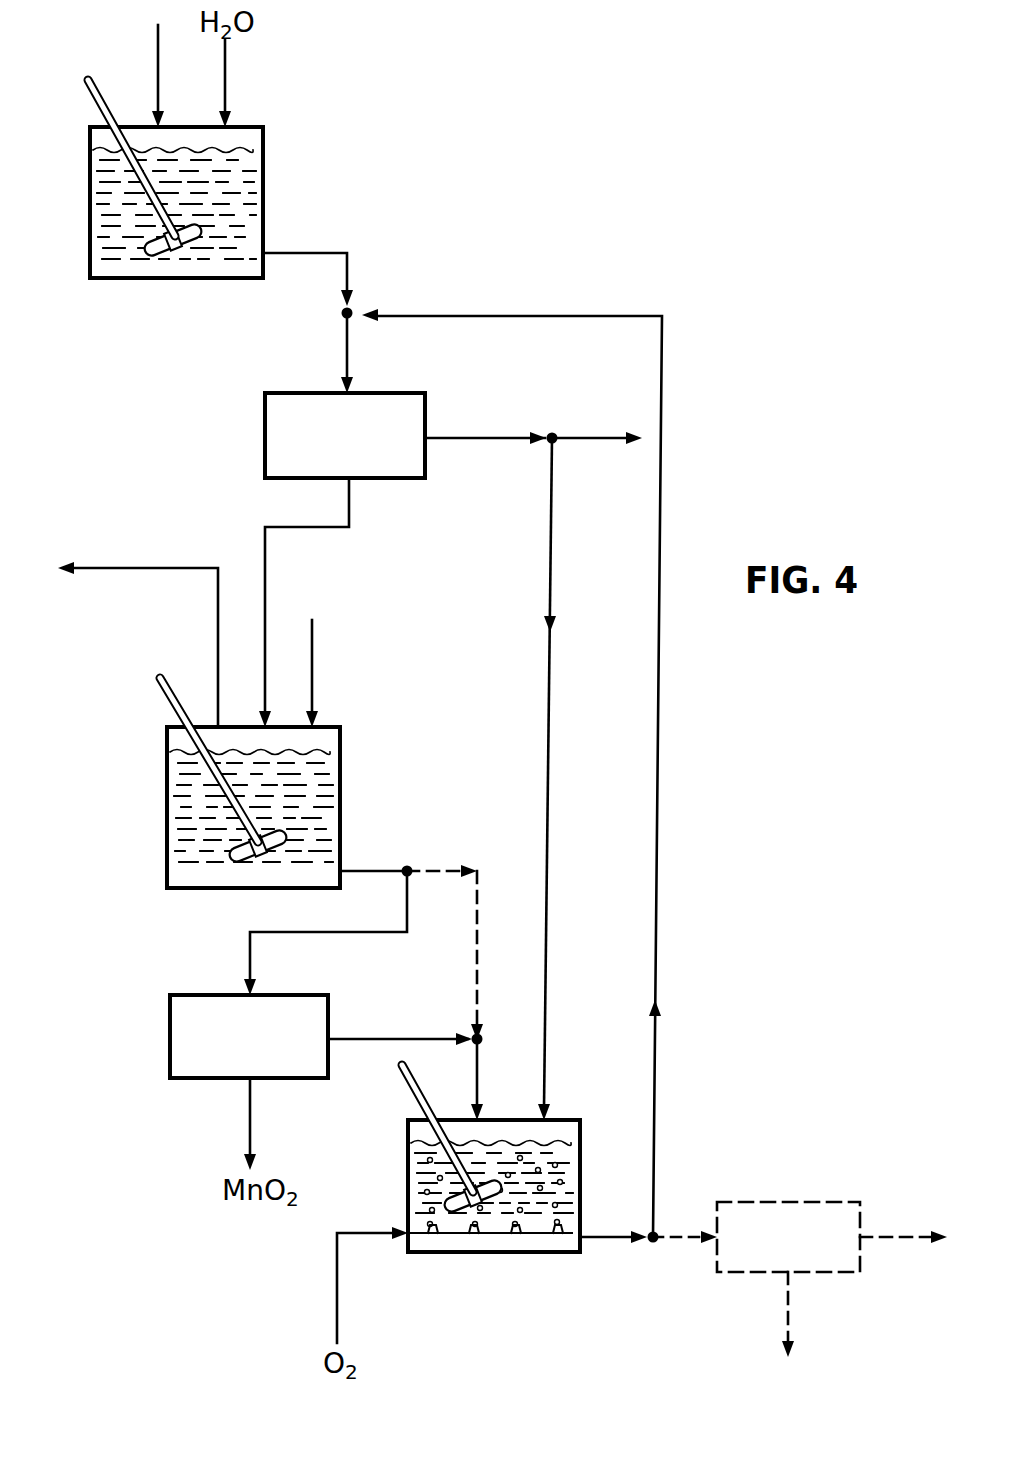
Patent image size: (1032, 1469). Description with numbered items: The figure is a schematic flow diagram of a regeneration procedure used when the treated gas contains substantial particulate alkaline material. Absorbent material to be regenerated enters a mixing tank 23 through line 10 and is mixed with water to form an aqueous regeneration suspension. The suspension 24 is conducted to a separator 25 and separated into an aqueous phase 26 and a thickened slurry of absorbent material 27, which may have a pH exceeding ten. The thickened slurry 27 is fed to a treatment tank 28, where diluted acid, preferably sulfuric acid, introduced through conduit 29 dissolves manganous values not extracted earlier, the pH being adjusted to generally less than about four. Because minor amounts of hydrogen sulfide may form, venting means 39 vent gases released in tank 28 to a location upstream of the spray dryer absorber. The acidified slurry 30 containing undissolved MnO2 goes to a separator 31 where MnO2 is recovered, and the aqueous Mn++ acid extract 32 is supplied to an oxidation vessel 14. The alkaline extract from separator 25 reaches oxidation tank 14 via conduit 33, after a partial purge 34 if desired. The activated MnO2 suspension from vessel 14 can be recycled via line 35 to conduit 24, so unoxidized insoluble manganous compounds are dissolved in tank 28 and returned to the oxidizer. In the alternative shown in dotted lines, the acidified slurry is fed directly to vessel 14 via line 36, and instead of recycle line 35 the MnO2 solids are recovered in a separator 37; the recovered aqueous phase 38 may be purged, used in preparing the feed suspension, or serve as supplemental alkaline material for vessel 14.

The line 10 is at (156, 58).
The mixing tank 23 is at (257, 163).
The suspension 24 is at (346, 345).
The separator 25 is at (275, 438).
The aqueous phase 26 is at (500, 436).
The thickened slurry of absorbent material 27 is at (268, 572).
The treatment tank 28 is at (172, 795).
The conduit 29 is at (314, 657).
The acidified slurry 30 is at (362, 869).
The separator 31 is at (186, 1029).
The aqueous Mn++ acid extract 32 is at (412, 1038).
The conduit 33 is at (545, 735).
The partial purge 34 is at (568, 437).
The recycle line 35 is at (471, 314).
The line 36 is at (431, 869).
The separator 37 is at (793, 1200).
The recovered aqueous phase 38 is at (899, 1236).
The venting means 39 is at (116, 567).
The oxidation vessel 14 is at (410, 1161).